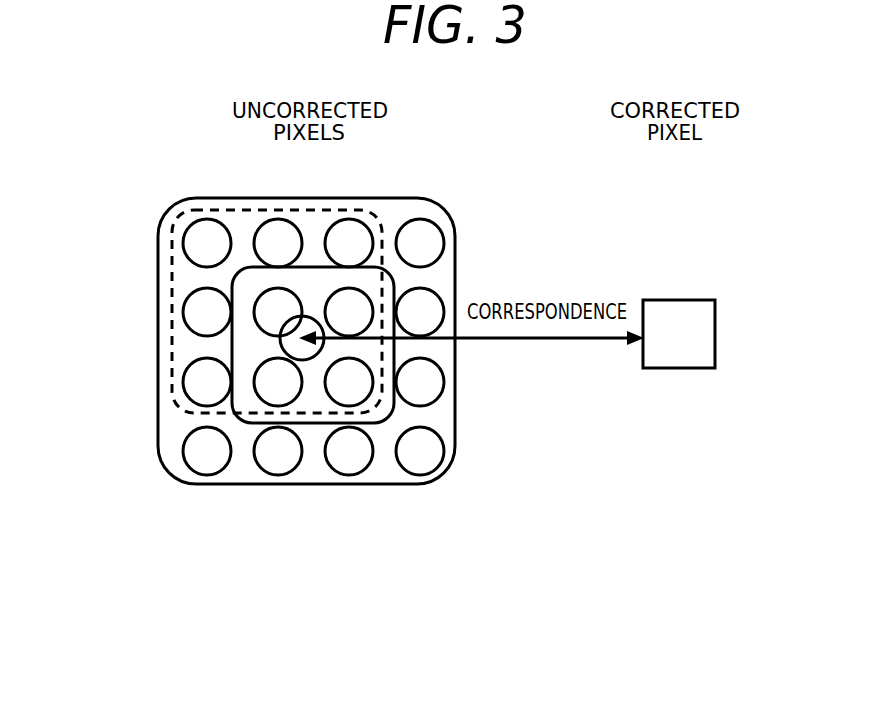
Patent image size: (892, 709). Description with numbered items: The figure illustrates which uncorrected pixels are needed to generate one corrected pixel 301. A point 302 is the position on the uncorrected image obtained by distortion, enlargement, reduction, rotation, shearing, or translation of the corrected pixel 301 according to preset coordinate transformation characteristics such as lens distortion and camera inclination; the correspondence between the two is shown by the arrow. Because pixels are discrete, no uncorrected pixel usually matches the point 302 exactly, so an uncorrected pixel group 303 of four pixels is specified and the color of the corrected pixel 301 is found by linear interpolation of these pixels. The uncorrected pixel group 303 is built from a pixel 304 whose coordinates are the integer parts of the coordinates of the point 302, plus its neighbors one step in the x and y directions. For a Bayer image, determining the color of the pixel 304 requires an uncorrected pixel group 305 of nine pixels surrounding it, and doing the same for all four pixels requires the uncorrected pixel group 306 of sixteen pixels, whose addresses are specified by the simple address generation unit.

The corrected pixel 301 is at (682, 300).
The point 302 is at (322, 351).
The uncorrected pixel group 303 is at (233, 291).
The pixel 304 is at (268, 293).
The uncorrected pixel group 305 is at (382, 220).
The uncorrected pixel group 306 is at (449, 213).